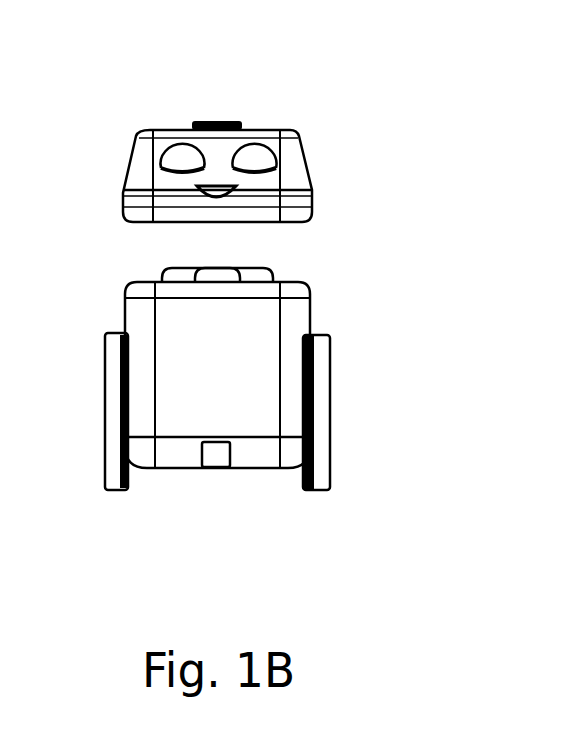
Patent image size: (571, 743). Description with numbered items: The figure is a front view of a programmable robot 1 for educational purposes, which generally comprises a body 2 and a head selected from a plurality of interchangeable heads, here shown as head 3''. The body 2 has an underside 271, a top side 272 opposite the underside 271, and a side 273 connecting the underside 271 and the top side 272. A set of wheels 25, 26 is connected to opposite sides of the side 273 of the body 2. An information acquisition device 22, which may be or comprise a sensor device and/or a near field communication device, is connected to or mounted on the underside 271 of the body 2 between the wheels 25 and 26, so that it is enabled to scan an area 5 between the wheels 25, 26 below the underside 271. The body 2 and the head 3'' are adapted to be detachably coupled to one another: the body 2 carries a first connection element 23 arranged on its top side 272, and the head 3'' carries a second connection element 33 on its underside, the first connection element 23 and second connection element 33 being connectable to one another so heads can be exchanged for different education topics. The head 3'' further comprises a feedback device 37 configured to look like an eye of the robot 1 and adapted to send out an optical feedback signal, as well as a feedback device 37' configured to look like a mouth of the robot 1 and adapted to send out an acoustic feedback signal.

The programmable robot 1 is at (355, 214).
The body 2 is at (85, 281).
The interchangeable head 3'' is at (180, 126).
The area 5 is at (227, 532).
The information acquisition device 22 is at (213, 452).
The first connection element 23 is at (230, 268).
The wheel 25 is at (107, 488).
The wheel 26 is at (320, 488).
The second connection element 33 is at (203, 222).
The feedback device 37 is at (169, 126).
The feedback device 37' is at (260, 107).
The underside 271 is at (170, 480).
The top side 272 is at (293, 282).
The side 273 is at (175, 347).